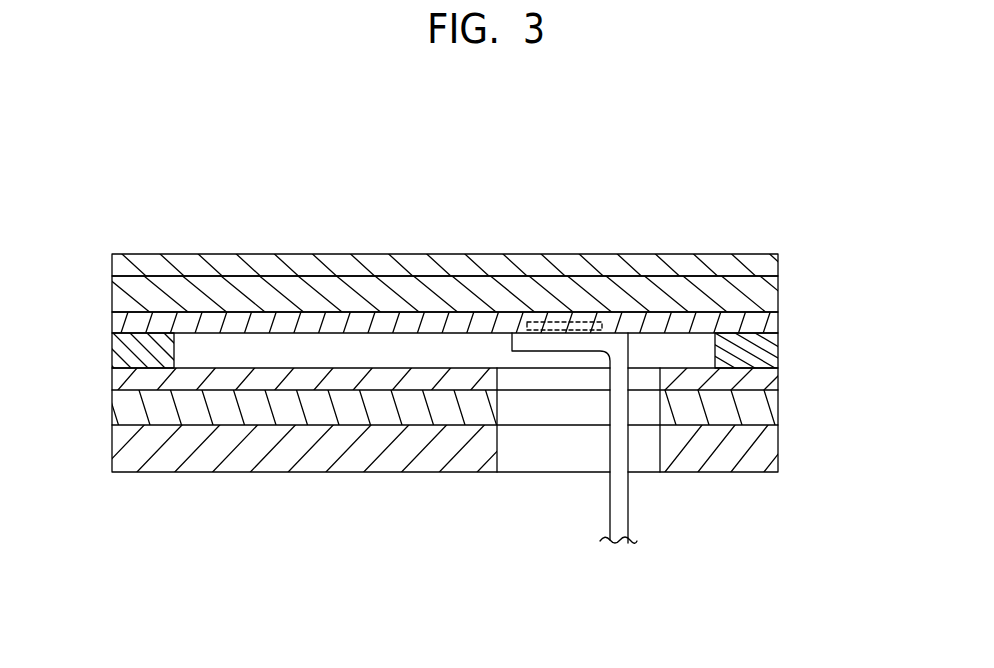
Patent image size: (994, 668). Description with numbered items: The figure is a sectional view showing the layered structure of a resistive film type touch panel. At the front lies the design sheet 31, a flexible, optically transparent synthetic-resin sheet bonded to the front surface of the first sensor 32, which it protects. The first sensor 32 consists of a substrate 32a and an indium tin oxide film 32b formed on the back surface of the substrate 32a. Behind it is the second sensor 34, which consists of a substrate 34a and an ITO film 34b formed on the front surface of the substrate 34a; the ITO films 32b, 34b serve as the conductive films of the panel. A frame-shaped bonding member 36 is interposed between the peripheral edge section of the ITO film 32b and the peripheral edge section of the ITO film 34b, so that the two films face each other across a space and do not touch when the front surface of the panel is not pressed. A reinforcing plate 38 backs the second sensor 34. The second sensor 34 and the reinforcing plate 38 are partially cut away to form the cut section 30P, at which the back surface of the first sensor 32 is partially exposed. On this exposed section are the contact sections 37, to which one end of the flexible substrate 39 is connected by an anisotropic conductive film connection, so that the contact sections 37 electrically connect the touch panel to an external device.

The design sheet 31 is at (208, 253).
The first sensor 32 is at (467, 227).
The substrate 32a is at (768, 298).
The ITO film 32b is at (778, 312).
The contact section 37 is at (552, 322).
The bonding member 36 is at (112, 345).
The second sensor 34 is at (502, 404).
The substrate 34a is at (778, 425).
The ITO film 34b is at (778, 378).
The reinforcing plate 38 is at (383, 472).
The cut section 30P is at (559, 400).
The flexible substrate 39 is at (628, 512).